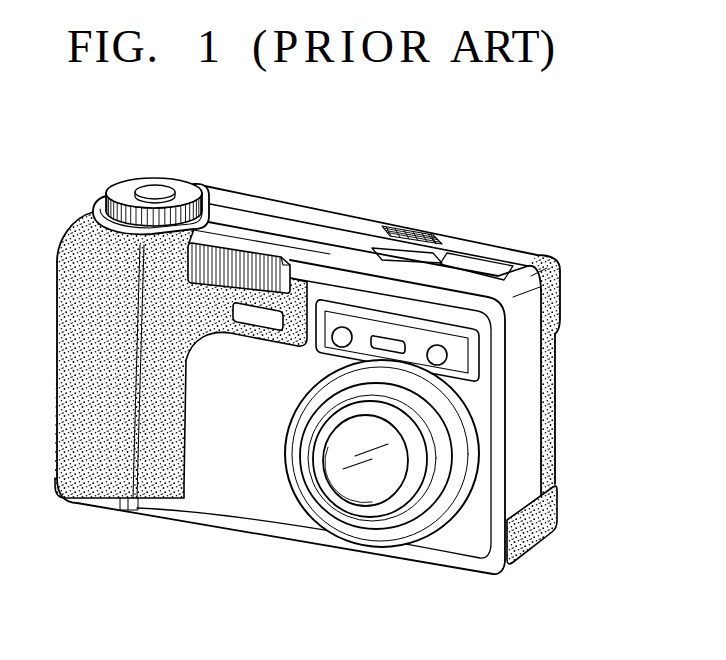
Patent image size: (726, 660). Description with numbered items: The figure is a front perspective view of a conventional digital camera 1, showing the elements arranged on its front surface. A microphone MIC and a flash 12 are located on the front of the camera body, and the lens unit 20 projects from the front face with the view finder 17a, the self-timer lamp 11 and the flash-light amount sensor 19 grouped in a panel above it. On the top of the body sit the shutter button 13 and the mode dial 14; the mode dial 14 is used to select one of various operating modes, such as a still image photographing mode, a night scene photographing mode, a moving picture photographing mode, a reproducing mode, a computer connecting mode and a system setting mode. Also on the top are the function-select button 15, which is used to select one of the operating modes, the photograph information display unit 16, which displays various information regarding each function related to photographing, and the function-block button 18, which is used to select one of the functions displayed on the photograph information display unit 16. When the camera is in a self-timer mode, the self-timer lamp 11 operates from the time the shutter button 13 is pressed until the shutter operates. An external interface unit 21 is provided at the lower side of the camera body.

The digital camera 1 is at (235, 568).
The self-timer lamp 11 is at (343, 327).
The flash 12 is at (237, 263).
The shutter button 13 is at (155, 190).
The mode dial 14 is at (122, 193).
The function-select button 15 is at (400, 228).
The photograph information display unit 16 is at (409, 253).
The view finder 17a is at (397, 340).
The function-block button 18 is at (433, 237).
The flash-light amount sensor 19 is at (445, 356).
The lens unit 20 is at (395, 463).
The external interface unit 21 is at (552, 510).
The microphone MIC is at (266, 318).